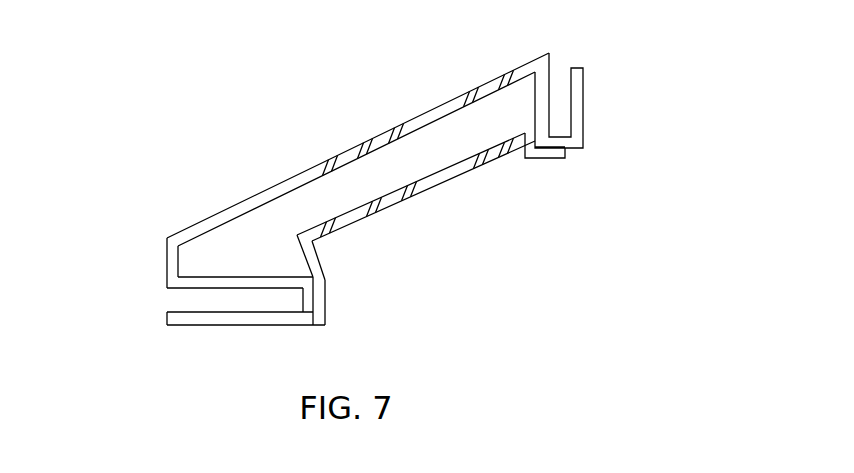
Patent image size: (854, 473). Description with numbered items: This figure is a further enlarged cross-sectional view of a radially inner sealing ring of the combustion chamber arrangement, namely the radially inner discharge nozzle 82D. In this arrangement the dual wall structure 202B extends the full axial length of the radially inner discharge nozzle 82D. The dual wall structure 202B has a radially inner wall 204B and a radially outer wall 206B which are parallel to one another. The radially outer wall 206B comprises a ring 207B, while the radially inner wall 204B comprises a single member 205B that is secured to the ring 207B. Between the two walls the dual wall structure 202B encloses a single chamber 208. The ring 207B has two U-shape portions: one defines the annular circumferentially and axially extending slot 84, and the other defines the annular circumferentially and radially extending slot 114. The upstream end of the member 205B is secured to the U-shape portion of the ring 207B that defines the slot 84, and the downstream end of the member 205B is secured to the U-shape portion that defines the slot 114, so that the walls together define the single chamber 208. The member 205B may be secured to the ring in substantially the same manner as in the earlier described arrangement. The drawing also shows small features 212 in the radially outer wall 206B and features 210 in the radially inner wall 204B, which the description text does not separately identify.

The radially inner discharge nozzle 82D is at (504, 268).
The radially outer wall 206B is at (256, 193).
The ring 207B is at (167, 250).
The single chamber 208 is at (207, 260).
The annular circumferentially and axially extending slot 84 is at (238, 304).
The annular circumferentially and radially extending slot 114 is at (558, 95).
The slots of first plate 212 is at (393, 128).
The dual wall structure 202B is at (436, 241).
The radially inner wall 204B is at (376, 212).
The member 205B is at (327, 240).
The slots of second plate 210 is at (417, 189).